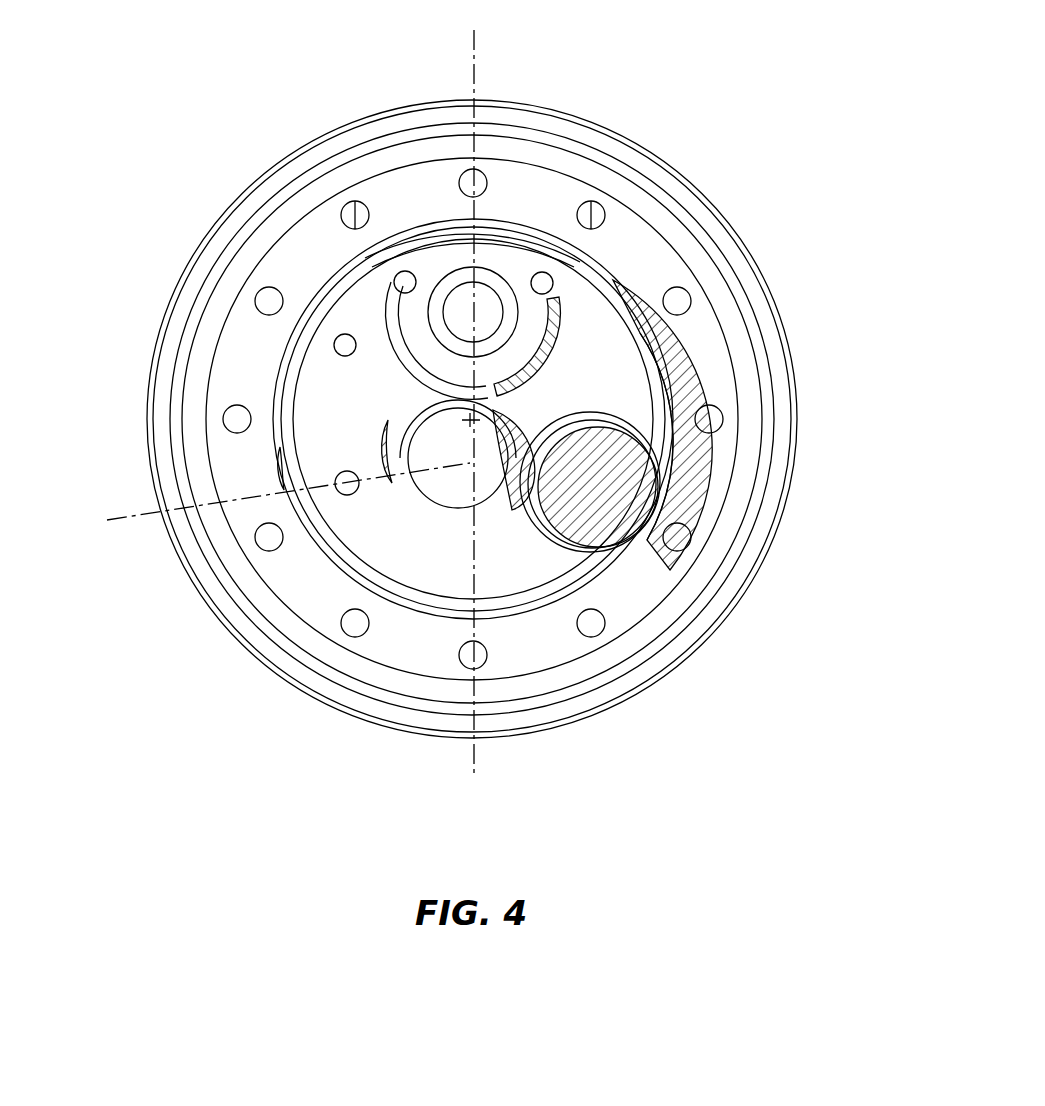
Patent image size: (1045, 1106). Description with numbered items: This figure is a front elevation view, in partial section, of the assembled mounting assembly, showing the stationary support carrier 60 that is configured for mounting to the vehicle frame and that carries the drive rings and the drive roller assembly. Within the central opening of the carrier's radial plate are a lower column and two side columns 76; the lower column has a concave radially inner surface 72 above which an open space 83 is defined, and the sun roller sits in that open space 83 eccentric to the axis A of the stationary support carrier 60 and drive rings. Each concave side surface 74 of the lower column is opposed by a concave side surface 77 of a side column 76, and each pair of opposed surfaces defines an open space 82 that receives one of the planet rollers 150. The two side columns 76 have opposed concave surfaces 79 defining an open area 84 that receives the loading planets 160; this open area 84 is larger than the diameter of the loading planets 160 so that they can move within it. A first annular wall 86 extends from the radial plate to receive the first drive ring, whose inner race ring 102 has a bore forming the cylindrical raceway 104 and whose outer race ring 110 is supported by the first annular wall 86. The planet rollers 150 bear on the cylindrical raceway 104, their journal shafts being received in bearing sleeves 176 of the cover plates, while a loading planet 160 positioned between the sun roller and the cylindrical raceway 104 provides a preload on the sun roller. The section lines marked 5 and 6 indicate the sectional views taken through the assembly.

The section line 5- 5 is at (474, 50).
The section line 6- 6 is at (474, 0).
The stationary support carrier 60 is at (260, 172).
The concave radially inner surface 72 is at (553, 562).
The side surface 74 is at (594, 565).
The side column 76 is at (715, 405).
The concave side surface 77 is at (658, 470).
The opposed concave surface 79 is at (660, 402).
The open space 82 is at (665, 490).
The open space 83 is at (497, 522).
The open area 84 is at (585, 296).
The first annular wall 86 is at (790, 470).
The inner race ring 102 is at (663, 270).
The cylindrical raceway 104 is at (413, 600).
The outer race ring 110 is at (720, 577).
The planet roller 150 is at (317, 518).
The loading planet 160 is at (495, 232).
The bearing sleeve 176 is at (352, 500).
The axis A is at (468, 418).